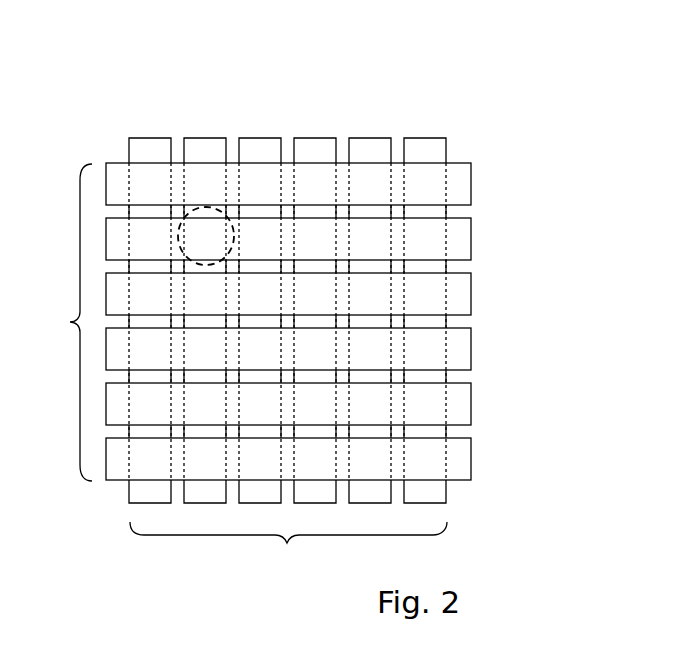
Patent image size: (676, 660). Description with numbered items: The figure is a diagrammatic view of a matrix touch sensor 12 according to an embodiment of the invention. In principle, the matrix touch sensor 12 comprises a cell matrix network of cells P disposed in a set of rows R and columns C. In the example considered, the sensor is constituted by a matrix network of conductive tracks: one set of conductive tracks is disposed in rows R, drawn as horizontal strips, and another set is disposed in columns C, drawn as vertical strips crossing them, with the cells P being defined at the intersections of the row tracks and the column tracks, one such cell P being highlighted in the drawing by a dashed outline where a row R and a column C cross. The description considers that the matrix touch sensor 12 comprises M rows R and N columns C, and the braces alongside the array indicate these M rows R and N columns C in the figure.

The matrix touch sensor 12 is at (368, 264).
The columns C is at (371, 148).
The rows R is at (462, 237).
The cells P is at (206, 245).
The number of rows M is at (68, 322).
The number of columns N is at (288, 546).